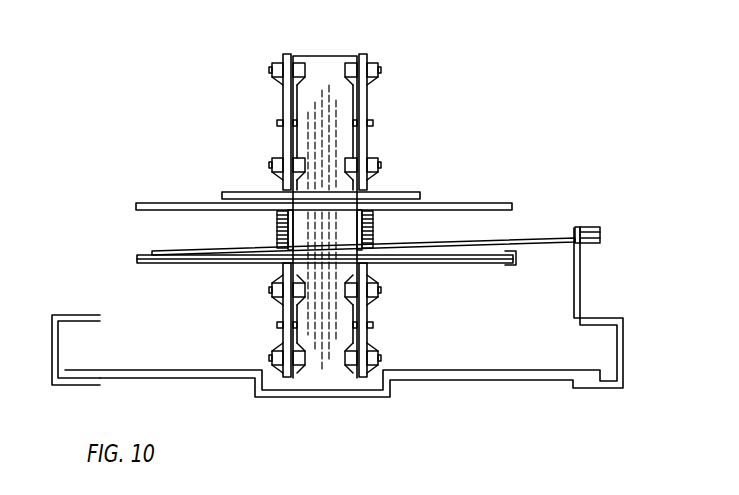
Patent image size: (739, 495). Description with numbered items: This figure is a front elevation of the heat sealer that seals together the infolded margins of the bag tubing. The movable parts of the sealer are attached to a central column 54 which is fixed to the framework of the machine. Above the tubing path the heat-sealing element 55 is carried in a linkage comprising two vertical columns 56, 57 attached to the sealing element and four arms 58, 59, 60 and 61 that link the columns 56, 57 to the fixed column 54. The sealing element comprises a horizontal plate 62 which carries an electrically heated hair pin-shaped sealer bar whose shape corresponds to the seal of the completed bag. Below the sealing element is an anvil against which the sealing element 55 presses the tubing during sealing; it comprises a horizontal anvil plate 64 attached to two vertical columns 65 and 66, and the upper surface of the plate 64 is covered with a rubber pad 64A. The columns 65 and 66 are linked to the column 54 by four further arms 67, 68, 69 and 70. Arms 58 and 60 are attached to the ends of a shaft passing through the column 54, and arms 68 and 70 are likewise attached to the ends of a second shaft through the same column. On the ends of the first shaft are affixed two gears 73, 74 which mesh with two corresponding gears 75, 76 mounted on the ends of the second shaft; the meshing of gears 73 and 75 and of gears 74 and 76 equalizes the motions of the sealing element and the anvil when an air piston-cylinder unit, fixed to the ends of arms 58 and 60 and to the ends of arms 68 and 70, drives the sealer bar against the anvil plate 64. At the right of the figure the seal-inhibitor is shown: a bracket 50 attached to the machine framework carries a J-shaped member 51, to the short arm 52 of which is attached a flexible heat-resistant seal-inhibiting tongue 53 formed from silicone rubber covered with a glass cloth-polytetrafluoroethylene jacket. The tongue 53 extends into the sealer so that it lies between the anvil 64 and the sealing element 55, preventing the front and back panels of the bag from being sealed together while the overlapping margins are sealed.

The bracket 50 is at (580, 283).
The J-shaped member 51 is at (600, 230).
The short arm 52 is at (596, 243).
The seal-inhibiting tongue 53 is at (548, 242).
The column 54 is at (331, 56).
The heat-sealing element 55 is at (402, 176).
The vertical column 56 is at (367, 104).
The vertical column 57 is at (283, 108).
The arm 58 is at (386, 189).
The arm 59 is at (381, 70).
The arm 60 is at (270, 163).
The arm 61 is at (270, 68).
The horizontal plate 62 is at (136, 206).
The anvil plate 64 is at (137, 259).
The rubber pad 64A is at (518, 255).
The vertical column 65 is at (368, 322).
The vertical column 66 is at (280, 320).
The arm 67 is at (378, 357).
The arm 68 is at (378, 290).
The arm 69 is at (272, 356).
The arm 70 is at (272, 290).
The gear 73 is at (374, 222).
The gear 74 is at (277, 220).
The gear 75 is at (373, 240).
The gear 76 is at (277, 238).